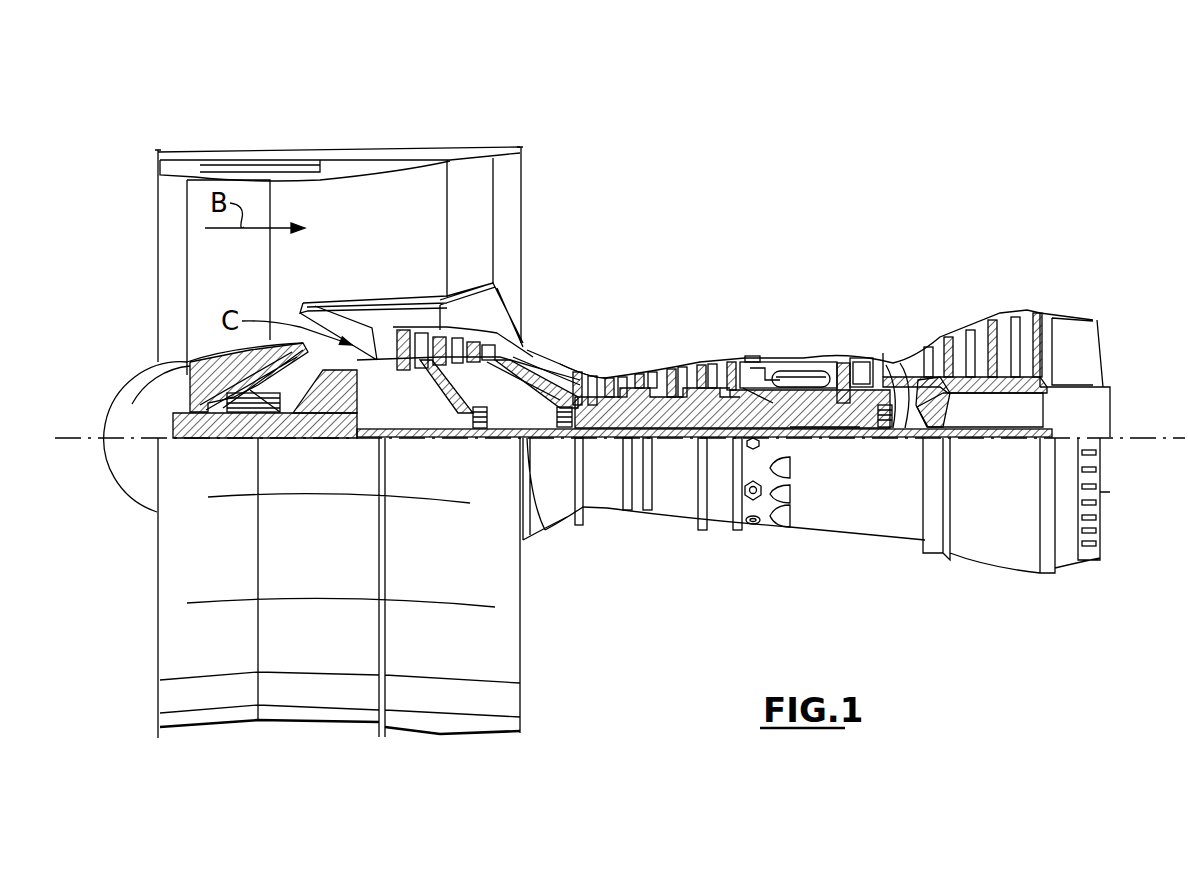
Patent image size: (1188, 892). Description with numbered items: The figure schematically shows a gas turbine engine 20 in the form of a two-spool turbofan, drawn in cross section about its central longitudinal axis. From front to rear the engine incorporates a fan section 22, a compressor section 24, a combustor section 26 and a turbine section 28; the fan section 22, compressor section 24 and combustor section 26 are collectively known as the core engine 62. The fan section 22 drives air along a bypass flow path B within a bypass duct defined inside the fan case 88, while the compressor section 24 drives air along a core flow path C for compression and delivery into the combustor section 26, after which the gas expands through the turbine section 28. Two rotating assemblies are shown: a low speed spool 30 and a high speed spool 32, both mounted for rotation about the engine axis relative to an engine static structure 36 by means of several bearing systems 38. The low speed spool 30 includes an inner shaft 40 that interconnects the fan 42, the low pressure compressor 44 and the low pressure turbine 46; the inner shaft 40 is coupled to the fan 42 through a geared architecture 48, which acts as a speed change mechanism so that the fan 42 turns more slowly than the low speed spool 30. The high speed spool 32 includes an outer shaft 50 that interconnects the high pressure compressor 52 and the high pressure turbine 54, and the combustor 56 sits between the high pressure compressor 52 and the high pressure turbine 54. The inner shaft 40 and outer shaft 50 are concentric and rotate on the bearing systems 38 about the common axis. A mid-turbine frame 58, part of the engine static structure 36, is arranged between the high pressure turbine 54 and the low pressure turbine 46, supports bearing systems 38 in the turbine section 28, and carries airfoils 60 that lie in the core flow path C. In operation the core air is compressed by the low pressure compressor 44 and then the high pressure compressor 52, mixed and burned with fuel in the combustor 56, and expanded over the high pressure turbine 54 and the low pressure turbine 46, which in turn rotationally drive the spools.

The gas turbine engine 20 is at (806, 200).
The fan section 22 is at (270, 144).
The compressor section 24 is at (577, 345).
The combustor section 26 is at (795, 332).
The turbine section 28 is at (943, 297).
The low speed spool 30 is at (680, 457).
The high speed spool 32 is at (722, 400).
The engine static structure 36 is at (720, 537).
The bearing systems 38 is at (478, 425).
The inner shaft 40 is at (528, 445).
The fan 42 is at (242, 284).
The low pressure compressor 44 is at (443, 345).
The low pressure turbine 46 is at (984, 328).
The geared architecture 48 is at (352, 418).
The outer shaft 50 is at (800, 425).
The high pressure compressor 52 is at (621, 382).
The high pressure turbine 54 is at (861, 375).
The combustor 56 is at (797, 362).
The mid-turbine frame 58 is at (903, 347).
The airfoils 60 is at (908, 380).
The core engine 62 is at (687, 335).
The fan case 88 is at (338, 158).